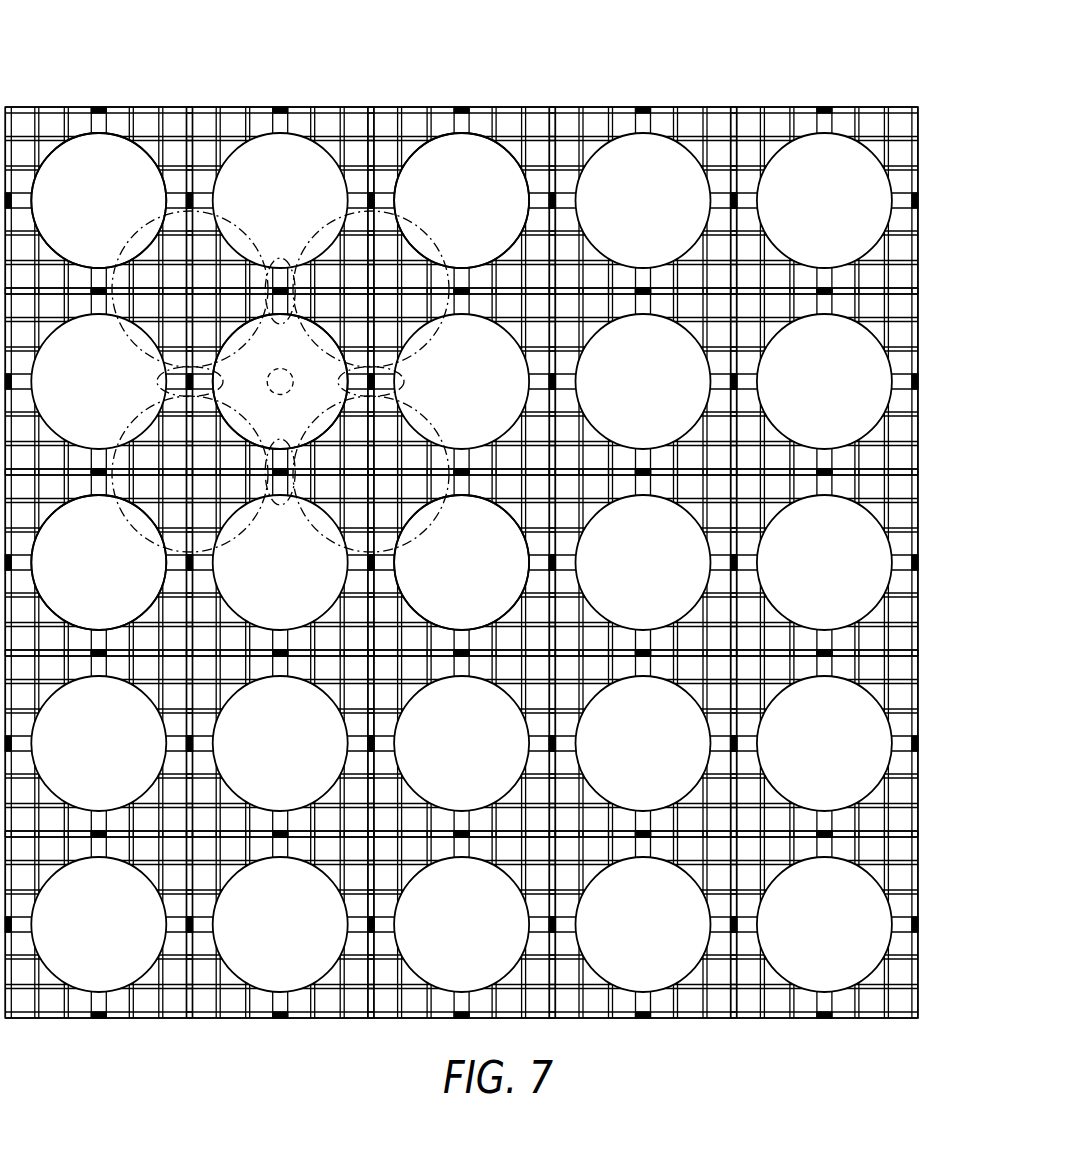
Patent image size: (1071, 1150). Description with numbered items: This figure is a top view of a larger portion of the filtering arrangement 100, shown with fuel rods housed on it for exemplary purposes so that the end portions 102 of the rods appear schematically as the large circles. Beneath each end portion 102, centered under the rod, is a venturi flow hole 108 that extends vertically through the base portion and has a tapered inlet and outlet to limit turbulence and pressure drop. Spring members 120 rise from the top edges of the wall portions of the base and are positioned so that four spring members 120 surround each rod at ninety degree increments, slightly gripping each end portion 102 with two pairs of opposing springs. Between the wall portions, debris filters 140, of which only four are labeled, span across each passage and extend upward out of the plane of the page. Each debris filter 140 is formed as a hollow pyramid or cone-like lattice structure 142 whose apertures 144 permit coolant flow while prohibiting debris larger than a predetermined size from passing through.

The filtering arrangement 100 is at (696, 92).
The end portion of fuel rod 102 is at (300, 360).
The venturi flow hole 108 is at (292, 378).
The spring member 120 is at (272, 255).
The debris filter 140 is at (104, 224).
The lattice structure 142 is at (372, 250).
The aperture 144 is at (172, 275).